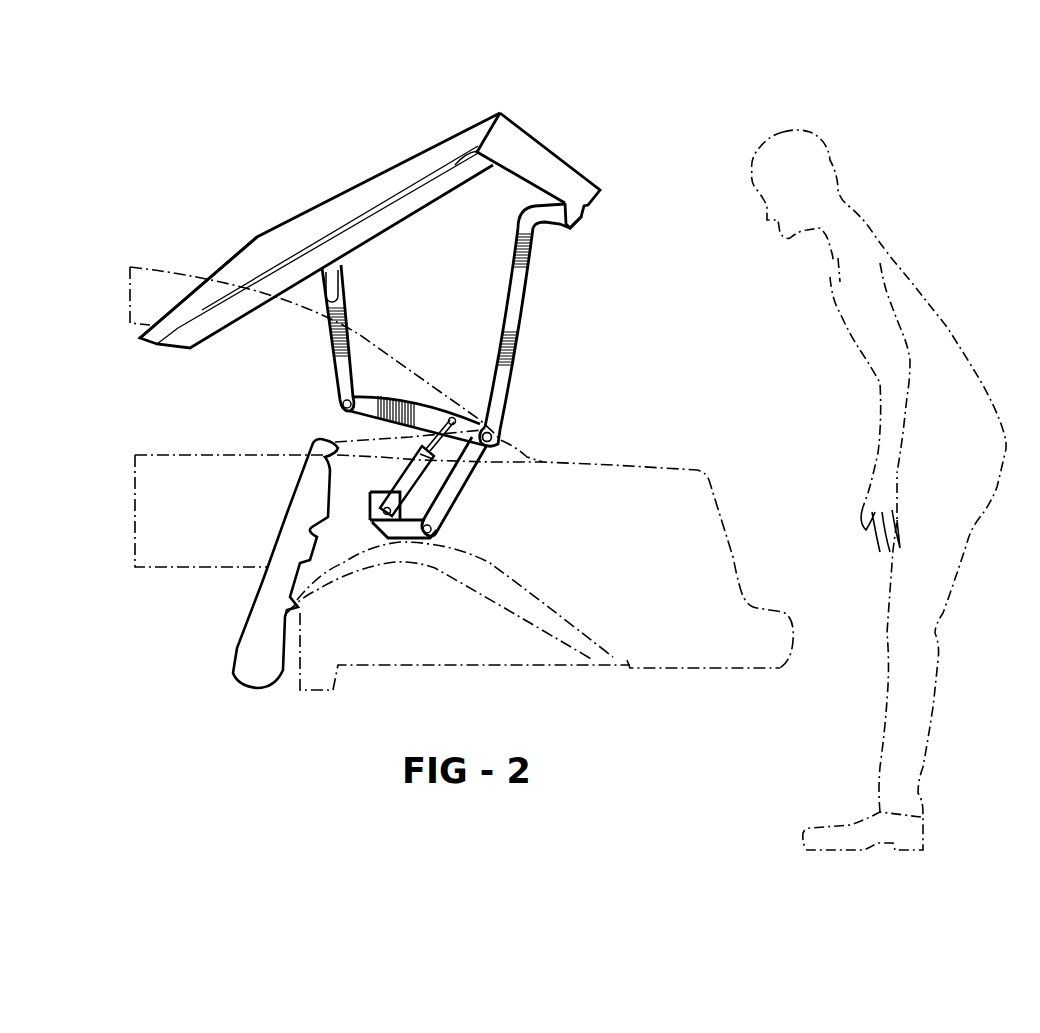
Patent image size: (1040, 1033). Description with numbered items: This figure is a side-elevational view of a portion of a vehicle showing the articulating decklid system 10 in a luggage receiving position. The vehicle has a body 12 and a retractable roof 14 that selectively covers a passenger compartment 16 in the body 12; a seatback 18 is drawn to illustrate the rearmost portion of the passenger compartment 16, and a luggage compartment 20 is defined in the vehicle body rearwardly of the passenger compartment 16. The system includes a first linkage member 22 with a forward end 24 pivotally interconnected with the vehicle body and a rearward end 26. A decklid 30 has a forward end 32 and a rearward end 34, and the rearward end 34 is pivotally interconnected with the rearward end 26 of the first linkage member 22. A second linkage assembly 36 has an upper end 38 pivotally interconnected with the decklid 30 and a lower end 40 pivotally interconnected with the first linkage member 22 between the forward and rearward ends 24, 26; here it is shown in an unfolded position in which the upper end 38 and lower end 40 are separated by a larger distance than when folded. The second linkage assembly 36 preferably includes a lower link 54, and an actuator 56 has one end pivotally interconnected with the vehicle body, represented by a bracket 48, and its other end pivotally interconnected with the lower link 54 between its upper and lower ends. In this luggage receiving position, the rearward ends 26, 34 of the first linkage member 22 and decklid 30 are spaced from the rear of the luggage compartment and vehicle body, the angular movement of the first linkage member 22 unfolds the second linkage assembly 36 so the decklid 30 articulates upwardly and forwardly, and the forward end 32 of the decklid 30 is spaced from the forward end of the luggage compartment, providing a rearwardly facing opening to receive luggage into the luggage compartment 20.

The articulating decklid system 10 is at (294, 154).
The vehicle body 12 is at (231, 511).
The retractable roof 14 is at (336, 364).
The passenger compartment 16 is at (477, 637).
The seatback 18 is at (250, 563).
The luggage compartment 20 is at (665, 427).
The first linkage member 22 is at (541, 337).
The forward end of first linkage member 24 is at (475, 486).
The rearward end of first linkage member 26 is at (555, 253).
The decklid 30 is at (402, 160).
The forward end of decklid 32 is at (280, 281).
The rearward end of decklid 34 is at (552, 163).
The second linkage assembly 36 is at (378, 318).
The upper end of second linkage assembly 38 is at (364, 274).
The lower end of second linkage assembly 40 is at (526, 433).
The bracket 48 is at (407, 555).
The lower link 54 is at (418, 395).
The actuator 56 is at (463, 467).